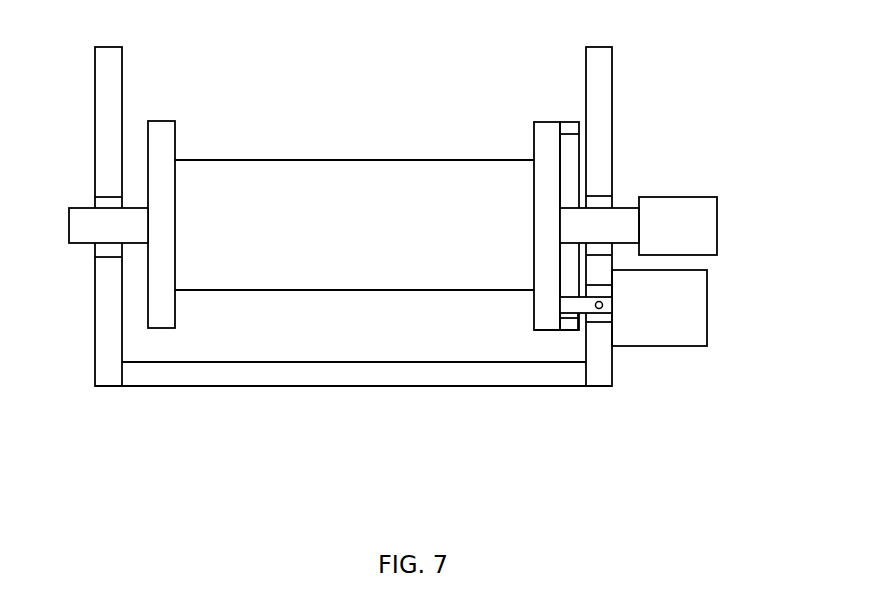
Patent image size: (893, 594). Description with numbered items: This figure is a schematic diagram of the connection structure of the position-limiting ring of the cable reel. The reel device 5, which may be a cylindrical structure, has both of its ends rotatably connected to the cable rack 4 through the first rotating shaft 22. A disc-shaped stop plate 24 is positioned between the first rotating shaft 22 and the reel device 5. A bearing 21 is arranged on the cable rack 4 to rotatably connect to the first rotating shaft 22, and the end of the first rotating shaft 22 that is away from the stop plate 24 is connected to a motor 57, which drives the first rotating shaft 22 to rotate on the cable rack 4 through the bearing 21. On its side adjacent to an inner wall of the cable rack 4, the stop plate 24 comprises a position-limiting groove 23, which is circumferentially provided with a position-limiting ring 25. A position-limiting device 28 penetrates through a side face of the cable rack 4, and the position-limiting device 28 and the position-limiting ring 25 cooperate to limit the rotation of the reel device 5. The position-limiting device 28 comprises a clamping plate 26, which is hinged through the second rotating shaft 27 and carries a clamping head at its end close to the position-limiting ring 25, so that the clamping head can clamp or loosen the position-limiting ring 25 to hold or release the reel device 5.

The cable rack 4 is at (255, 372).
The reel device 5 is at (311, 267).
The bearing 21 is at (112, 248).
The first rotating shaft 22 is at (612, 210).
The position-limiting groove 23 is at (570, 150).
The stop plate 24 is at (158, 320).
The position-limiting ring 25 is at (570, 323).
The clamping plate 26 is at (575, 303).
The second rotating shaft 27 is at (601, 308).
The position-limiting device 28 is at (683, 313).
The motor 57 is at (677, 227).